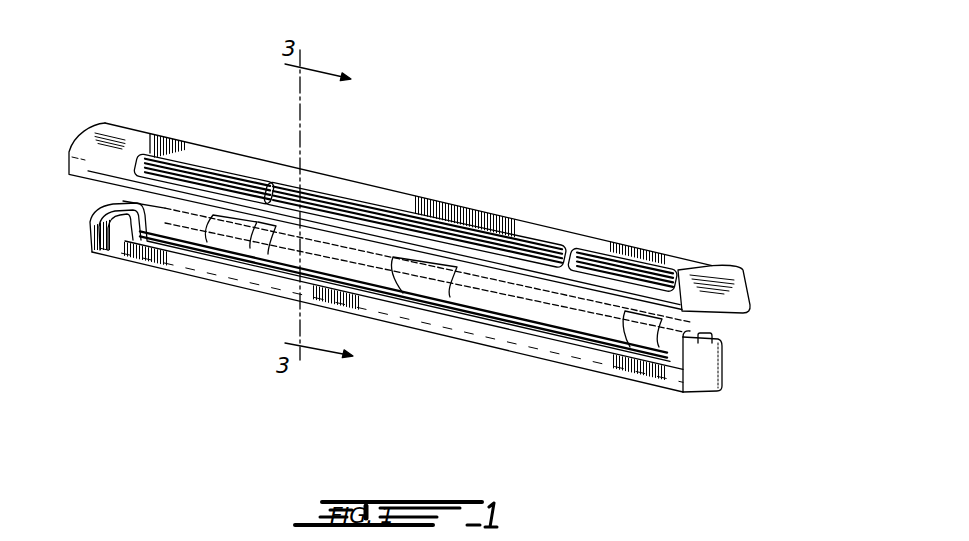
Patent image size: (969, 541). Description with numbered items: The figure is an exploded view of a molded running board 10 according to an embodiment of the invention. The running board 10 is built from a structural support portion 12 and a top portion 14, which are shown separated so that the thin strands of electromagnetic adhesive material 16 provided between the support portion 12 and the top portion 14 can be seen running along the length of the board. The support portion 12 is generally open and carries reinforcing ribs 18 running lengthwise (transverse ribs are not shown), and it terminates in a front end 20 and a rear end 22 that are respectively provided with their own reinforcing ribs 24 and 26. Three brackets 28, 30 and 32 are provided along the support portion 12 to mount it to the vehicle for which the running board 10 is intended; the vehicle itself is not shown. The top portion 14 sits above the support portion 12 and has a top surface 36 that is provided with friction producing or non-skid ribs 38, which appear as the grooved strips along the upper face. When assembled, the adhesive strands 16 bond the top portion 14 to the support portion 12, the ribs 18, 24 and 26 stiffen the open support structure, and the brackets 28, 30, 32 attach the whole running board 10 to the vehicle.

The molded running board 10 is at (636, 156).
The structural support portion 12 is at (601, 368).
The top portion 14 is at (638, 293).
The thin strands of electromagnetic adhesive material 16 is at (554, 348).
The reinforcing ribs 18 is at (418, 303).
The front end 20 is at (93, 236).
The rear end 22 is at (701, 383).
The reinforcing ribs 24 is at (98, 219).
The reinforcing ribs 26 is at (701, 341).
The bracket 28 is at (273, 249).
The bracket 30 is at (441, 294).
The bracket 32 is at (684, 346).
The top surface 36 is at (551, 226).
The non-skid ribs 38 is at (391, 229).